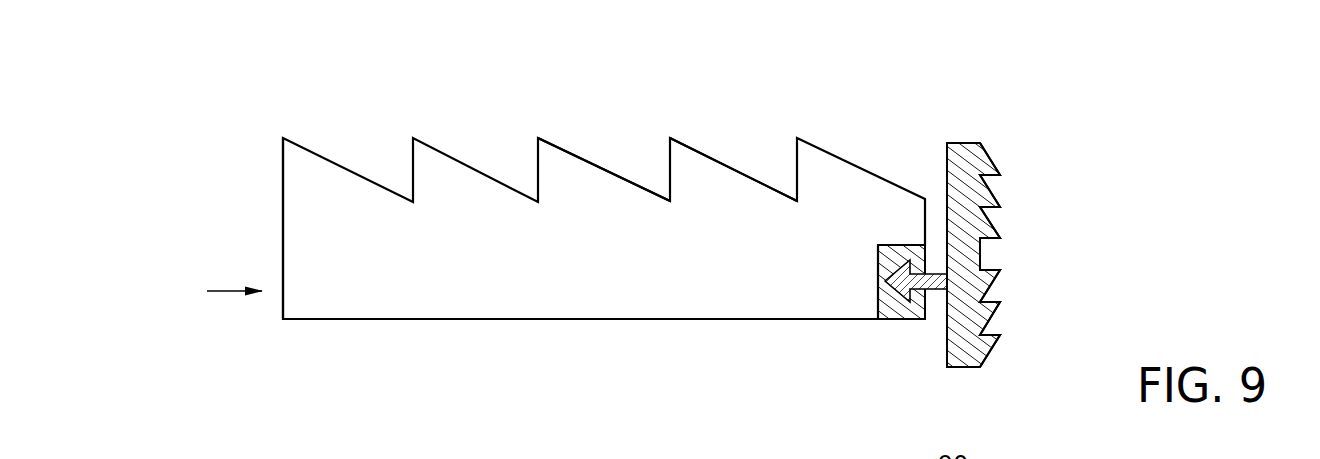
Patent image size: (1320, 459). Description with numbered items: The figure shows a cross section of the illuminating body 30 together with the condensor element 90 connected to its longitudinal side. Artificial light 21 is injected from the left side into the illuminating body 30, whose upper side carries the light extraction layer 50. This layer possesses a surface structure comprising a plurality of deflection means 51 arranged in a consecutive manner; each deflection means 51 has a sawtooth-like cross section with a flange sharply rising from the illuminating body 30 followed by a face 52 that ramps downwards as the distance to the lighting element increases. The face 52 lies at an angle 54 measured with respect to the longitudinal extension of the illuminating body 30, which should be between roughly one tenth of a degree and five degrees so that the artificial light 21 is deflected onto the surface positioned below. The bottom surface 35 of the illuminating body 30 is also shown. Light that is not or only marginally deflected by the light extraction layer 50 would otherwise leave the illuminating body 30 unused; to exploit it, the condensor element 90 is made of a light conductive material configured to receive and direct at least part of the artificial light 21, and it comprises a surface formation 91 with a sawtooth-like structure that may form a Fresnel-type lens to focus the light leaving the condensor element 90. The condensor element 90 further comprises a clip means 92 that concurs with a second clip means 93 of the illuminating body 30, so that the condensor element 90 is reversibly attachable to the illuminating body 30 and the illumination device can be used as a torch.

The light extraction layer 50 is at (760, 145).
The deflection means 51 is at (695, 163).
The face 52 is at (592, 163).
The angle 54 is at (245, 230).
The artificial light 21 is at (227, 291).
The bottom surface 35 is at (442, 320).
The illuminating body 30 is at (622, 303).
The second clip means 93 is at (890, 305).
The clip means 92 is at (935, 288).
The condensor element 90 is at (972, 125).
The surface formation 91 is at (975, 350).